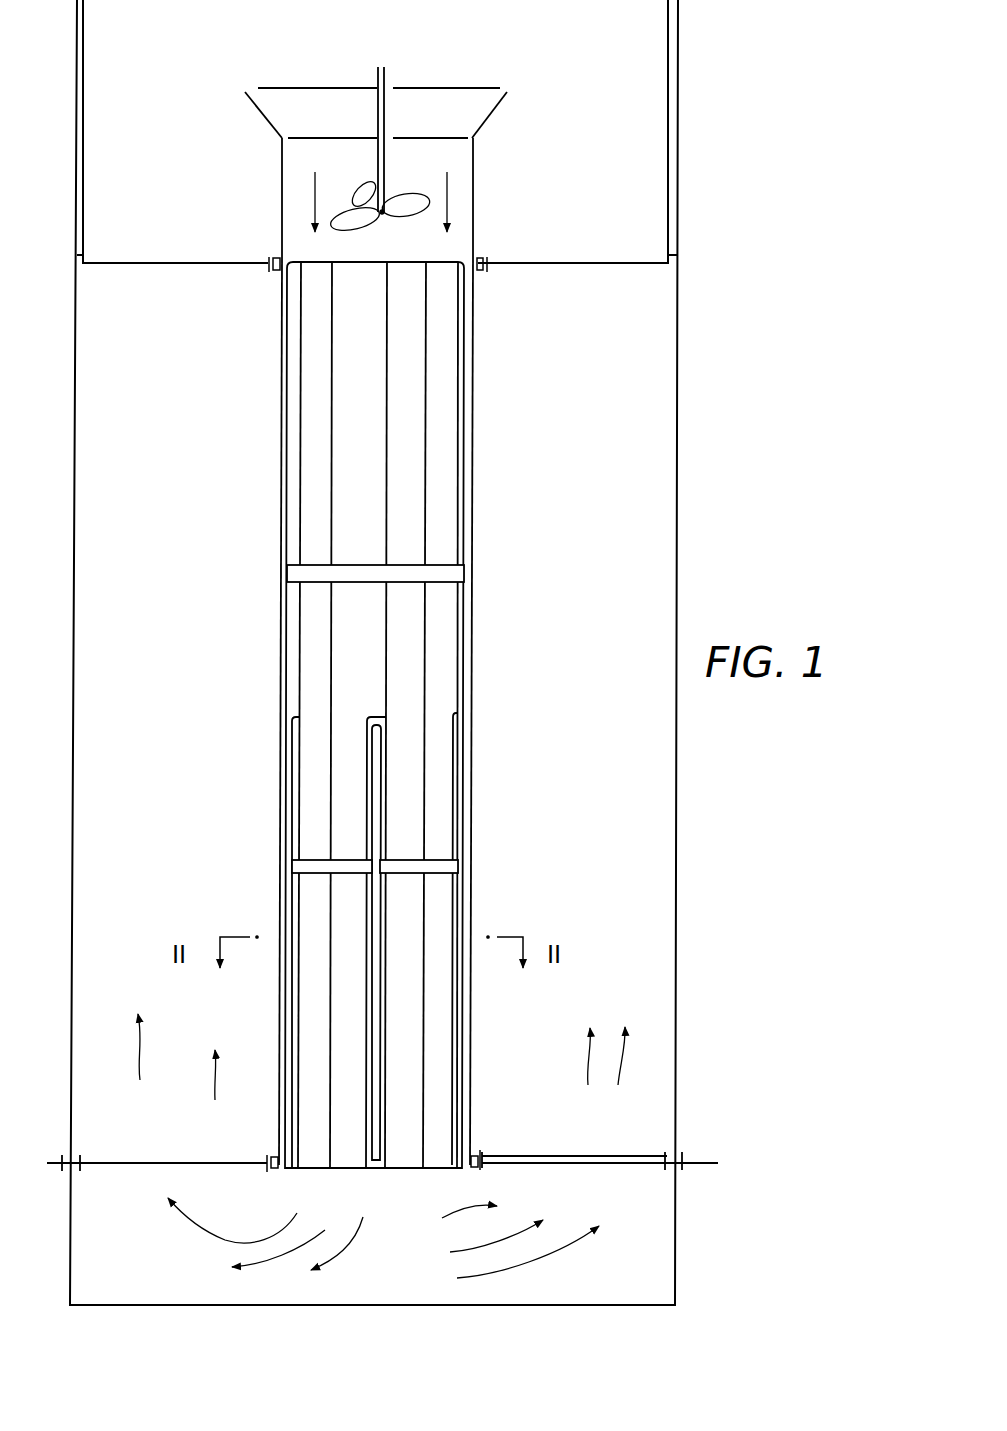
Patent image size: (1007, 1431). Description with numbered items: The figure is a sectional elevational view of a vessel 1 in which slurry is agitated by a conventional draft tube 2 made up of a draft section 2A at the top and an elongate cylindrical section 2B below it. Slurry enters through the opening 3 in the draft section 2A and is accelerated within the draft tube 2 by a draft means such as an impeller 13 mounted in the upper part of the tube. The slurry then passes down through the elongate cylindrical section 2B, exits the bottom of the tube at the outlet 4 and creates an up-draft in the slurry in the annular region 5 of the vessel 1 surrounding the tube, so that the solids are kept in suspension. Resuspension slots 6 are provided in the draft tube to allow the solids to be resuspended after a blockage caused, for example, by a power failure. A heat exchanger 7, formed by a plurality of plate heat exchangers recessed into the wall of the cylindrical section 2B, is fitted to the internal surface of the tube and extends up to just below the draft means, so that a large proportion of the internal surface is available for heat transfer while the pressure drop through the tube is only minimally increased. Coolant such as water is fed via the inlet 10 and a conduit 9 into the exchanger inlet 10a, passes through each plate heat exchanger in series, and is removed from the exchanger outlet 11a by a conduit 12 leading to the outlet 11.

The vessel 1 is at (677, 538).
The draft tube 2 is at (366, 714).
The draft section 2A is at (473, 233).
The elongate cylindrical section 2B is at (472, 627).
The opening 3 is at (482, 88).
The outlet of draft tube 4 is at (285, 1172).
The annular region 5 is at (178, 734).
The resuspension slots 6 is at (298, 815).
The heat exchanger 7 is at (450, 428).
The conduit 9 is at (372, 1236).
The conduit 12 is at (593, 1168).
The inlet 10 is at (618, 1122).
The outlet 11 is at (682, 1150).
The exchanger inlet 10a is at (305, 1122).
The exchanger outlet 11a is at (478, 1150).
The impeller 13 is at (402, 202).